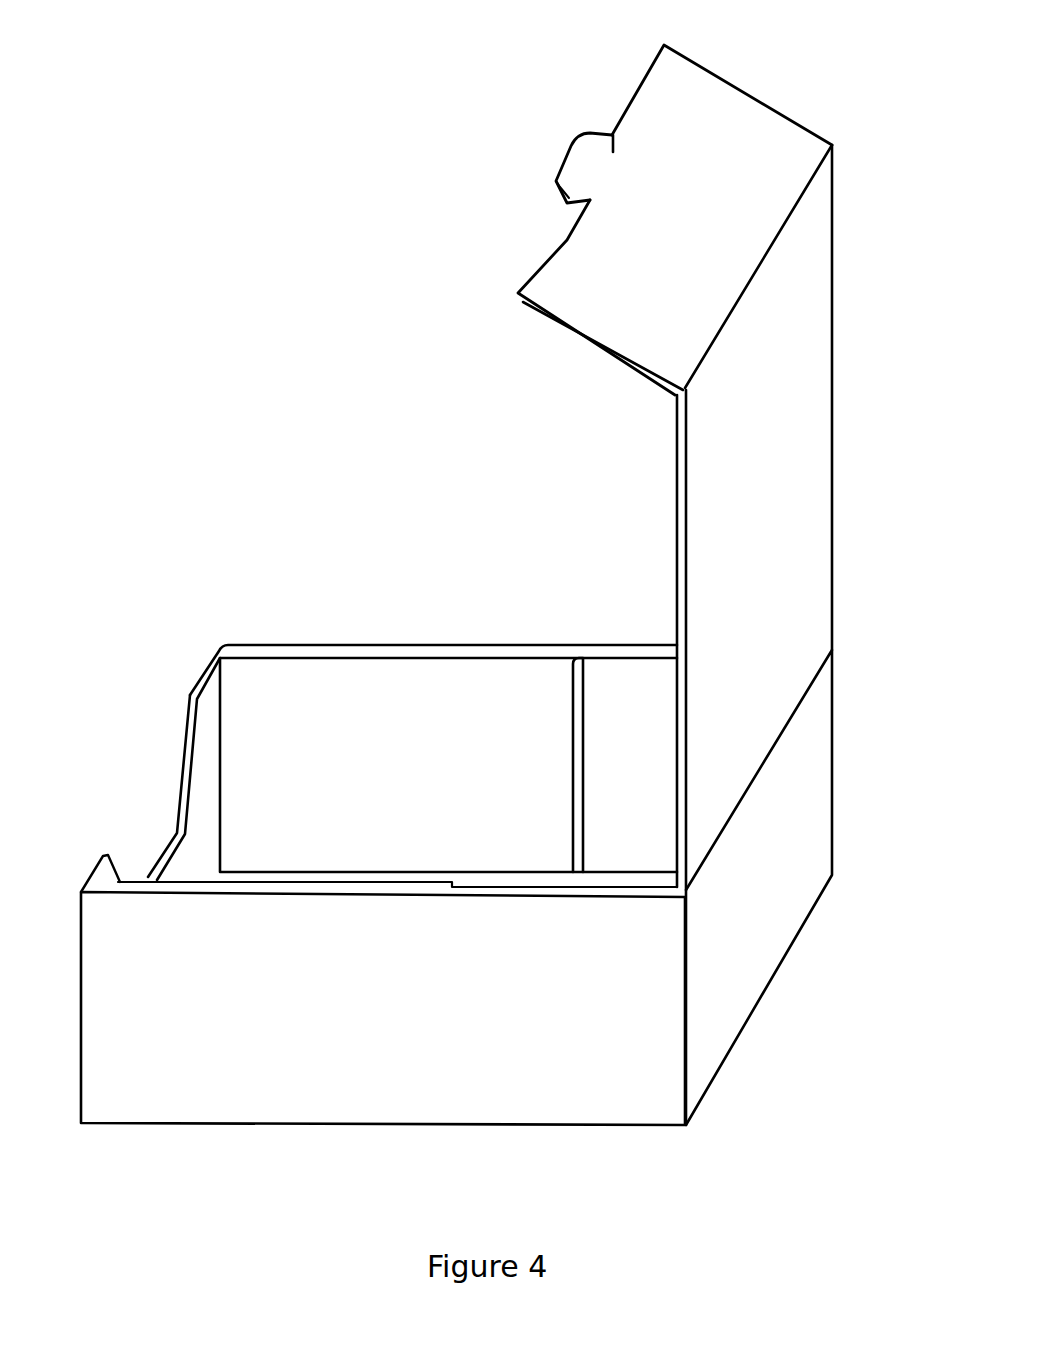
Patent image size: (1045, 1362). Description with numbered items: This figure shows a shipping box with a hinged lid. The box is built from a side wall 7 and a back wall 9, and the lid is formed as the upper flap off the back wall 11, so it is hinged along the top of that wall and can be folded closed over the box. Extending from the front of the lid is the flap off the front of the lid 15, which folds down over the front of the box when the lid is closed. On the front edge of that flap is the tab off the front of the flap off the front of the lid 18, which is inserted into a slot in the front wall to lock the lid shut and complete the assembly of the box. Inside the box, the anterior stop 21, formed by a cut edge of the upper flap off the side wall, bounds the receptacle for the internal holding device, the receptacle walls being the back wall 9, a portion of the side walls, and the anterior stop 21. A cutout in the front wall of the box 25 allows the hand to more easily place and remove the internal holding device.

The side wall of the box 7 is at (393, 1033).
The back wall of the box 9 is at (762, 892).
The upper flap off the back wall 11 is at (769, 458).
The flap off the front of the lid 15 is at (728, 147).
The tab off the front of the flap off the front of the lid 18 is at (580, 165).
The anterior stop 21 is at (578, 718).
The cutout in the front wall of the box 25 is at (145, 798).